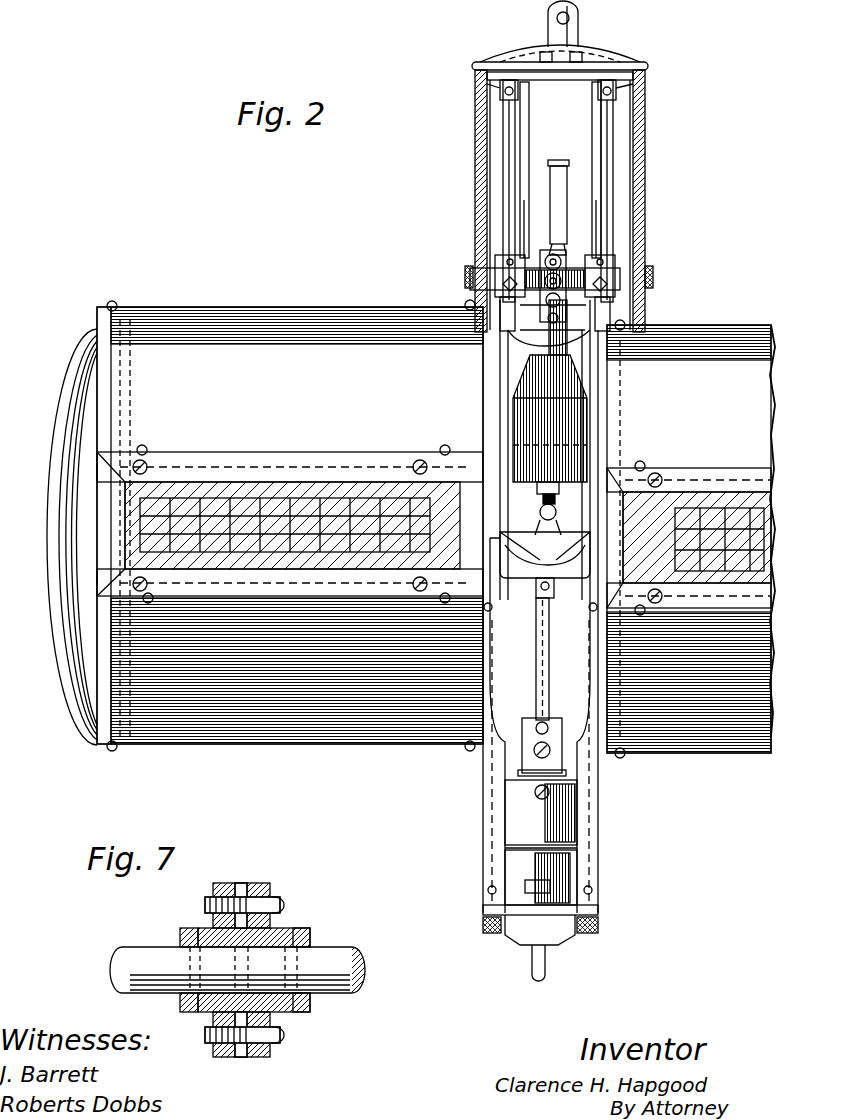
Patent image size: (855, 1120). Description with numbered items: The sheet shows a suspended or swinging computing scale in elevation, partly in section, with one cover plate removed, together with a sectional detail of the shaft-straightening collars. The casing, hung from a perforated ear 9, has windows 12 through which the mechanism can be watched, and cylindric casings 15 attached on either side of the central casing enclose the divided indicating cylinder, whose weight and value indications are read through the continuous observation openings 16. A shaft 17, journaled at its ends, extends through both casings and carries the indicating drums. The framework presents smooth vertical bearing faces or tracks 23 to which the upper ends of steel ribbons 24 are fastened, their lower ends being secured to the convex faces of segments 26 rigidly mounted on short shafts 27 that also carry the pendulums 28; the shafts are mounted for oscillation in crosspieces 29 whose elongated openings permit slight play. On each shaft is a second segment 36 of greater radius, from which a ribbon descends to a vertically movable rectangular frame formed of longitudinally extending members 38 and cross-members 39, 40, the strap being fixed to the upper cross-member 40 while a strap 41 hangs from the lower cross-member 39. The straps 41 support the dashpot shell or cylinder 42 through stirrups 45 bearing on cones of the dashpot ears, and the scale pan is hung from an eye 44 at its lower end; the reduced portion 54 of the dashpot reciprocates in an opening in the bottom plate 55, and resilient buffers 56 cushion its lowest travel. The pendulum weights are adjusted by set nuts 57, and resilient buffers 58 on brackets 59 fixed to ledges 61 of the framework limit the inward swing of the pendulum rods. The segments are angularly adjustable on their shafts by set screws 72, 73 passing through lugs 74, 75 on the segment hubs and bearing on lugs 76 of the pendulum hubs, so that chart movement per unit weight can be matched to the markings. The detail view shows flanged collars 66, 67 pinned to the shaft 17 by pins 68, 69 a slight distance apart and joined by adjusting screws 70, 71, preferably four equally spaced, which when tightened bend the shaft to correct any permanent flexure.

In FIG. 2, the perforated ear 9 is at (578, 17).
In FIG. 2, the windows 12 is at (480, 190).
In FIG. 2, the cylindric casings 15 is at (290, 318).
In FIG. 2, the observation openings 16 is at (140, 569).
In FIG. 2, the shaft 17 is at (552, 583).
In FIG. 7, the shaft 17 is at (368, 966).
In FIG. 2, the bearing faces or tracks 23 is at (606, 135).
In FIG. 2, the ribbons 24 is at (605, 93).
In FIG. 2, the segments 26 is at (603, 200).
In FIG. 2, the short shafts 27 is at (566, 254).
In FIG. 2, the pendulums 28 is at (580, 412).
In FIG. 2, the crosspieces 29 is at (495, 277).
In FIG. 2, the second segment 36 is at (552, 182).
In FIG. 2, the longitudinally extending members 38 is at (600, 395).
In FIG. 2, the lower cross-member 39 is at (538, 580).
In FIG. 2, the upper cross-member 40 is at (540, 450).
In FIG. 2, the straps 41 is at (540, 655).
In FIG. 2, the dashpot shell or cylinder 42 is at (565, 815).
In FIG. 2, the eye 44 is at (545, 962).
In FIG. 2, the stirrups 45 is at (548, 725).
In FIG. 2, the reduced portion of dashpot 54 is at (572, 875).
In FIG. 2, the bottom plate 55 is at (575, 920).
In FIG. 2, the resilient buffers 56 is at (550, 888).
In FIG. 2, the set nuts 57 is at (558, 490).
In FIG. 2, the resilient buffers 58 is at (556, 512).
In FIG. 2, the brackets 59 is at (545, 555).
In FIG. 2, the ledges 61 is at (590, 553).
In FIG. 7, the flanged collar 66 is at (292, 925).
In FIG. 7, the flanged collar 67 is at (205, 928).
In FIG. 7, the pin 68 is at (196, 1012).
In FIG. 7, the pin 69 is at (285, 1010).
In FIG. 7, the adjusting screw 70 is at (245, 885).
In FIG. 7, the adjusting screw 71 is at (238, 1060).
In FIG. 2, the set screw 72 is at (497, 268).
In FIG. 2, the set screw 73 is at (575, 330).
In FIG. 2, the lug 74 is at (649, 282).
In FIG. 2, the lug 75 is at (580, 312).
In FIG. 2, the lugs 76 is at (590, 305).